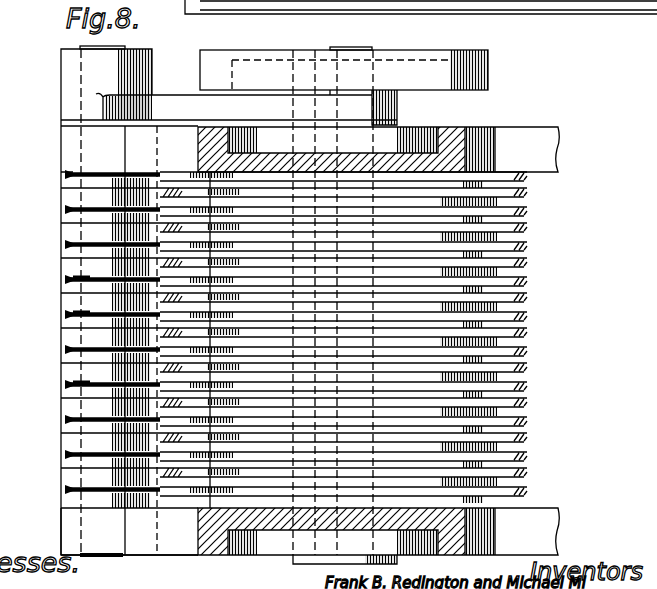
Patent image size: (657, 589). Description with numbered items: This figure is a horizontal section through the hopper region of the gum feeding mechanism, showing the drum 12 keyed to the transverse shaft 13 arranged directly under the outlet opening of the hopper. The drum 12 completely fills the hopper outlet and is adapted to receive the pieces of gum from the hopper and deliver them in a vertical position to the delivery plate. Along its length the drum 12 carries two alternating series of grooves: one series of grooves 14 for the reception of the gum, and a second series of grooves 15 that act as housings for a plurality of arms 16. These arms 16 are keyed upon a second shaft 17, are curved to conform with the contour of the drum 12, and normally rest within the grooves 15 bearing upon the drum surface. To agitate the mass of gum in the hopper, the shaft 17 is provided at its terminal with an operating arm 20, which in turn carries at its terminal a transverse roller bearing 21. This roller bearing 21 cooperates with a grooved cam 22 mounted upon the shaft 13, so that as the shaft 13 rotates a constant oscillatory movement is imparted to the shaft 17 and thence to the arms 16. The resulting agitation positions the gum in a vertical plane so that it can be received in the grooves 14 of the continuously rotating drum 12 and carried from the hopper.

The drum 12 is at (528, 298).
The shaft 13 is at (352, 43).
The grooves 14 is at (528, 177).
The grooves 15 is at (528, 193).
The arms 16 is at (92, 379).
The shaft 17 is at (97, 548).
The operating arm 20 is at (167, 97).
The roller bearing 21 is at (397, 101).
The grooved cam 22 is at (477, 57).